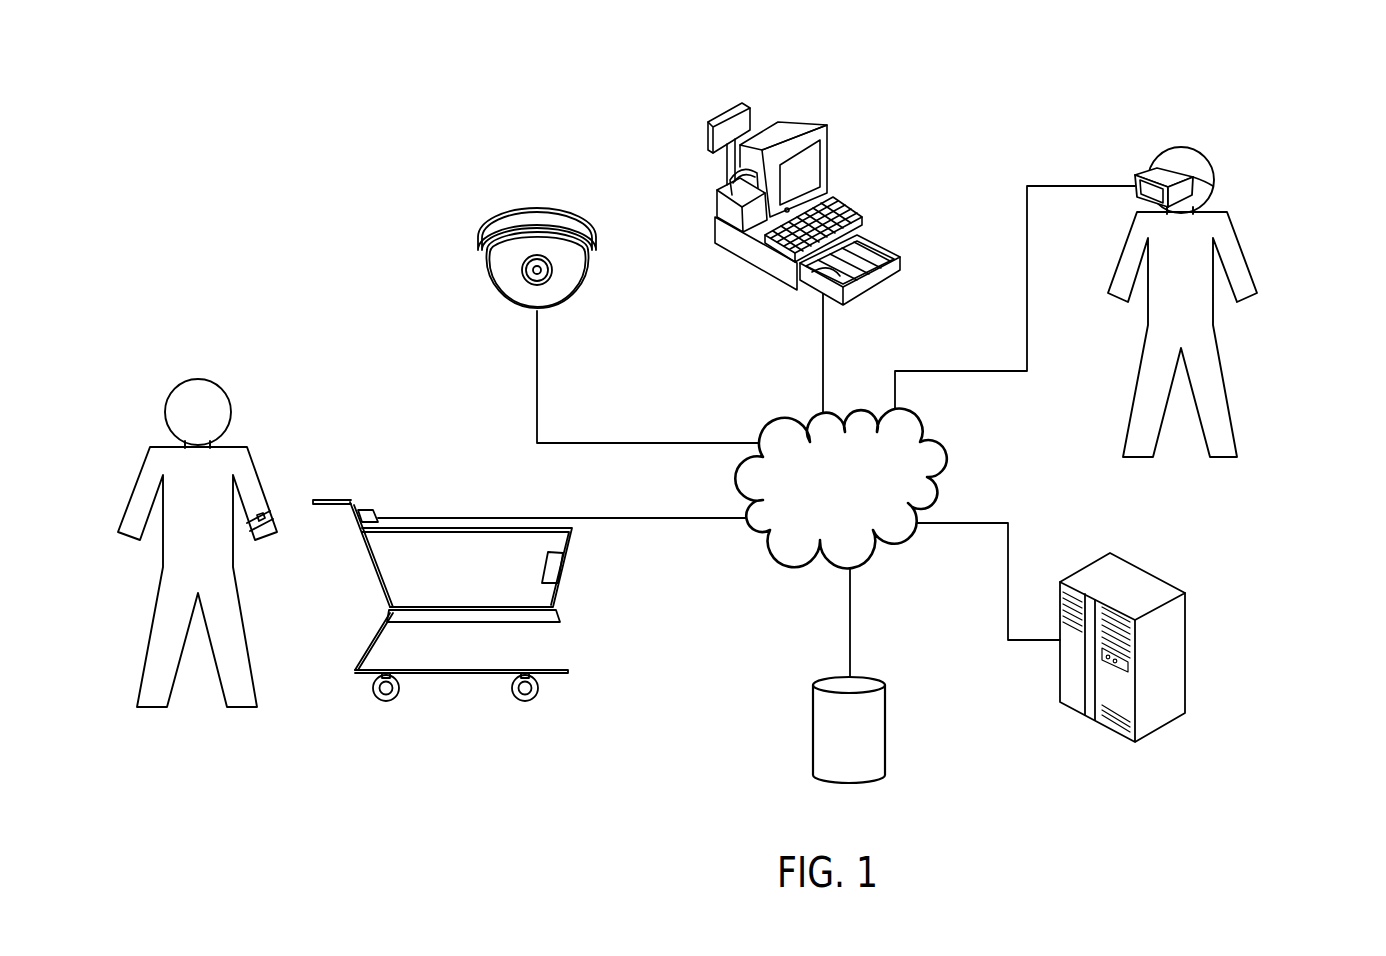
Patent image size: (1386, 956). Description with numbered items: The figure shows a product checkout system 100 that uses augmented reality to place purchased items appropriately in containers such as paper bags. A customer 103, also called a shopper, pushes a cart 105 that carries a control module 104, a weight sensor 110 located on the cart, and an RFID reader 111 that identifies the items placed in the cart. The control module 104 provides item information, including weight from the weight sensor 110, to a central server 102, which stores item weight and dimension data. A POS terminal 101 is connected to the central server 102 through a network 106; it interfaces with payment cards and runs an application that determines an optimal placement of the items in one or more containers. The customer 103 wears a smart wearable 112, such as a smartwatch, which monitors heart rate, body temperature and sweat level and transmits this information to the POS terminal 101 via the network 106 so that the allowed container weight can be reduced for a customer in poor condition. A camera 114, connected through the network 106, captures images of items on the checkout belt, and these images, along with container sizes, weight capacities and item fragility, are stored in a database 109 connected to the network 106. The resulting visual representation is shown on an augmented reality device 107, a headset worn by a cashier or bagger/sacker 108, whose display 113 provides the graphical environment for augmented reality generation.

The product checkout system 100 is at (1297, 135).
The POS terminal 101 is at (788, 122).
The central server 102 is at (1188, 655).
The customer 103 is at (197, 380).
The control module 104 is at (367, 508).
The cart 105 is at (462, 528).
The network 106 is at (938, 458).
The augmented reality device 107 is at (1142, 173).
The cashier or bagger/sacker 108 is at (1250, 265).
The database 109 is at (887, 732).
The weight sensor 110 is at (558, 620).
The RFID reader 111 is at (557, 567).
The smart wearable 112 is at (278, 523).
The display 113 is at (1135, 197).
The camera 114 is at (535, 205).